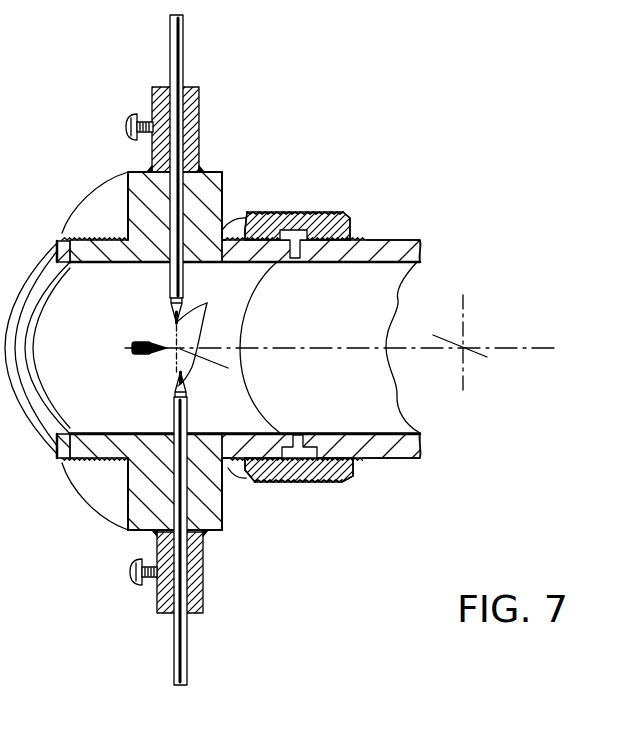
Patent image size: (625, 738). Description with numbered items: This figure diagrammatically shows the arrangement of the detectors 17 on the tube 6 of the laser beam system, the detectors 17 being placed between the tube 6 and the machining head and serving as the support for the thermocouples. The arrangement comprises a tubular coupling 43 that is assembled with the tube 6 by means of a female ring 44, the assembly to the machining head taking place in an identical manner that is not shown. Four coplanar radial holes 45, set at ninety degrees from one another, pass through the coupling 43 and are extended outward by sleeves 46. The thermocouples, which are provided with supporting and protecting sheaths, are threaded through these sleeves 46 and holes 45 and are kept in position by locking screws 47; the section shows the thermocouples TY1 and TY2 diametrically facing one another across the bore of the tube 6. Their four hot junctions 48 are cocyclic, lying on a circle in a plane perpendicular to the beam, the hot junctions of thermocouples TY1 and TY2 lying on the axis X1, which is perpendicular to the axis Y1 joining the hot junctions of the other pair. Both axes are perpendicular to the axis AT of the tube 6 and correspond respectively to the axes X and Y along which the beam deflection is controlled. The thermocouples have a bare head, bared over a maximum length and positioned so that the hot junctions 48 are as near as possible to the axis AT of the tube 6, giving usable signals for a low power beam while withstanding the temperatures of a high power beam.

The tube 6 is at (413, 442).
The detectors 17 is at (146, 623).
The tubular coupling 43 is at (205, 206).
The female ring 44 is at (337, 212).
The radial holes 45 is at (174, 188).
The sleeves 46 is at (197, 115).
The locking screws 47 is at (126, 131).
The hot junctions 48 is at (211, 332).
The thermocouple TY1 is at (184, 656).
The thermocouple TY2 is at (172, 50).
The axis X1 is at (227, 368).
The axis Y1 is at (177, 347).
The axis of tube AT is at (323, 350).
The axis X is at (487, 357).
The axis Y is at (465, 318).